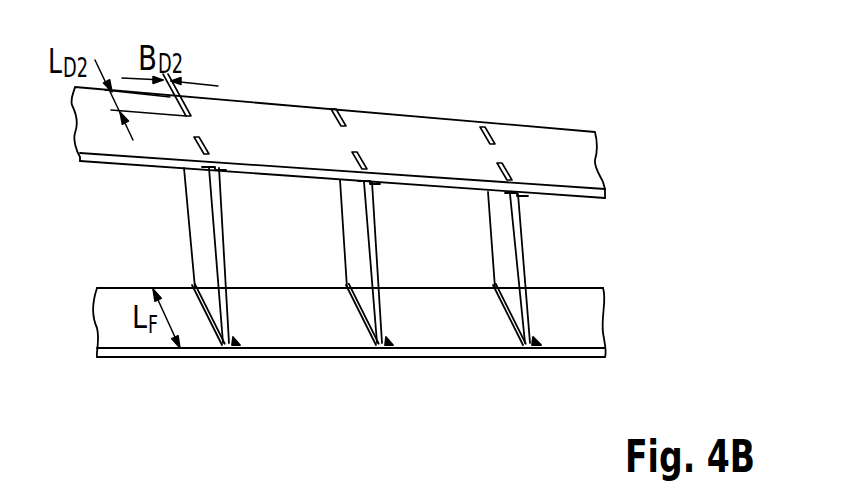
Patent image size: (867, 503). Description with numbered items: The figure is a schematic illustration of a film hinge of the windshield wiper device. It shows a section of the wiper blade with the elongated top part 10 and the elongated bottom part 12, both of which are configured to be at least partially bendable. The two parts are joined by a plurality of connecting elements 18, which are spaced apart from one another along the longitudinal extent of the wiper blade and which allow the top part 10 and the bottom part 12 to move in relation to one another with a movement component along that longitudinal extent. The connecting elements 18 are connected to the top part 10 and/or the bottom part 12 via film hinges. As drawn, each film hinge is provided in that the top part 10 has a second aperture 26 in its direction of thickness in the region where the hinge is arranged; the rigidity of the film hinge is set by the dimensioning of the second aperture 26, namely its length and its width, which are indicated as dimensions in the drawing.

The elongated top part 10 is at (535, 148).
The elongated bottom part 12 is at (450, 328).
The connecting elements 18 is at (363, 260).
The second aperture 26 is at (208, 146).